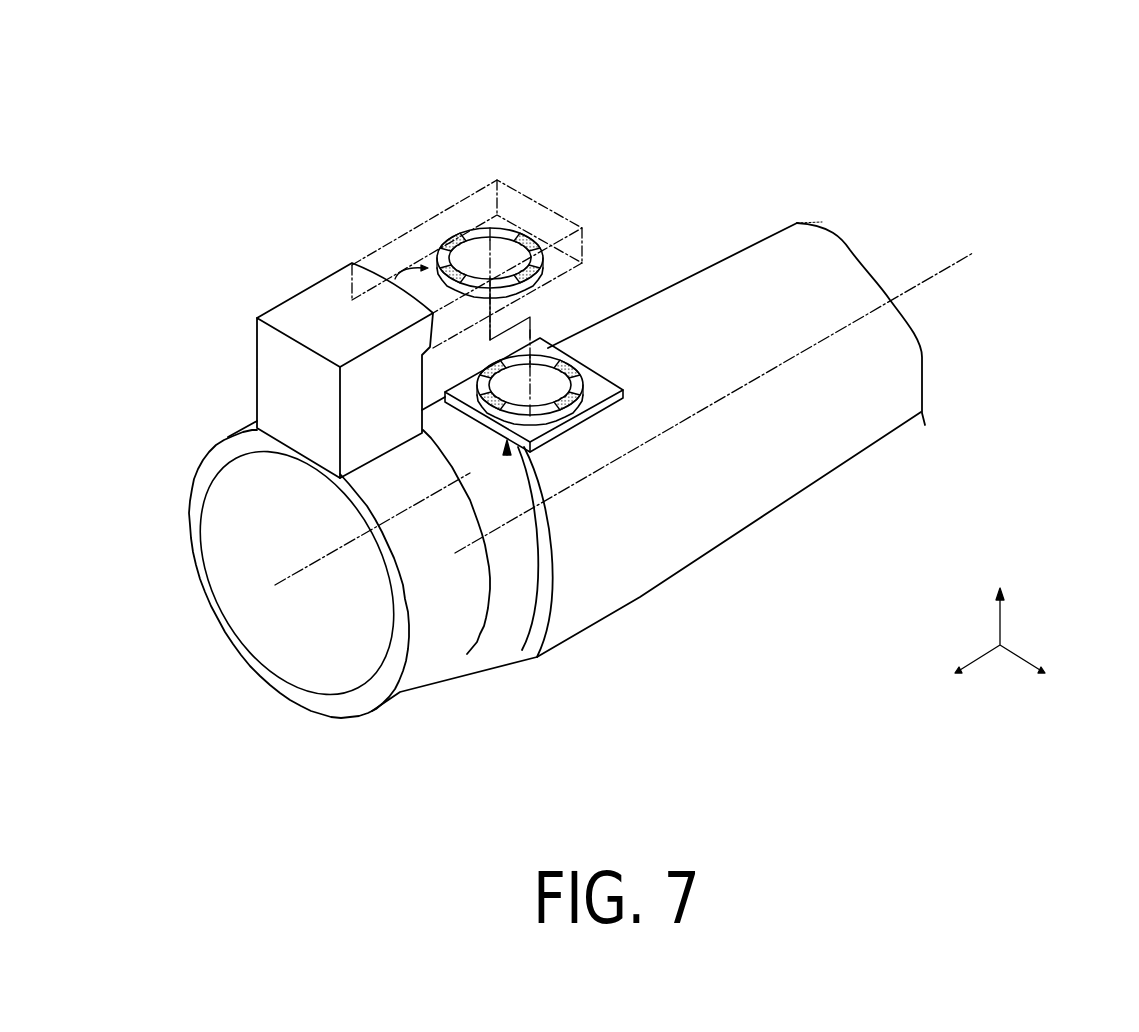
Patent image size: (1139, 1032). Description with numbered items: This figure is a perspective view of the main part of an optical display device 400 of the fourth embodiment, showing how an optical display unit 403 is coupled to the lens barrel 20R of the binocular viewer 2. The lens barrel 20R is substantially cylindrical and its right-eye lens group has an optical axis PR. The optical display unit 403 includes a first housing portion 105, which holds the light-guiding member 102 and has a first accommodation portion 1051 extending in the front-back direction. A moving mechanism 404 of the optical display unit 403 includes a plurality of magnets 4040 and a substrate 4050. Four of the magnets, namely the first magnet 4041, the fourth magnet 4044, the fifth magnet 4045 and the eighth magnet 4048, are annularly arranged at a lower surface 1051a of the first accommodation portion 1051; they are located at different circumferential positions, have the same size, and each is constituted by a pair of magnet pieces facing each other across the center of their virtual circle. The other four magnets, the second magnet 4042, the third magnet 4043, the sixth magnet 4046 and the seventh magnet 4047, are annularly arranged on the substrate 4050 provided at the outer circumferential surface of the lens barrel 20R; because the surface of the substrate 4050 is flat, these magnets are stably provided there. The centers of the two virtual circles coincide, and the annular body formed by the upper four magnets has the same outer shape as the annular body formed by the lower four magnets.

The optical display device 400 is at (880, 130).
The lens barrel 20R is at (835, 268).
The binocular viewer 2 is at (648, 466).
The optical axis PR is at (945, 268).
The optical display unit 403 is at (258, 685).
The light-guiding member 102 is at (342, 657).
The first housing portion 105 is at (290, 310).
The first accommodation portion 1051 is at (386, 264).
The lower surface 1051a is at (355, 266).
The magnets 4040 is at (620, 394).
The first magnet 4041 is at (515, 245).
The fourth magnet 4044 is at (630, 117).
The fifth magnet 4045 is at (445, 258).
The eighth magnet 4048 is at (538, 342).
The substrate 4050 is at (600, 385).
The moving mechanism 404 is at (530, 420).
The third magnet 4043 is at (487, 372).
The seventh magnet 4047 is at (497, 362).
The sixth magnet 4046 is at (578, 372).
The second magnet 4042 is at (560, 415).